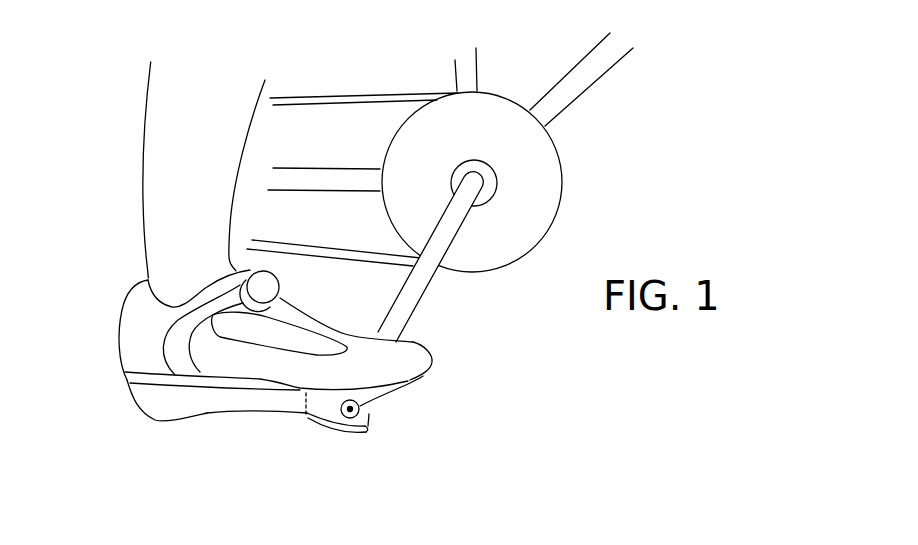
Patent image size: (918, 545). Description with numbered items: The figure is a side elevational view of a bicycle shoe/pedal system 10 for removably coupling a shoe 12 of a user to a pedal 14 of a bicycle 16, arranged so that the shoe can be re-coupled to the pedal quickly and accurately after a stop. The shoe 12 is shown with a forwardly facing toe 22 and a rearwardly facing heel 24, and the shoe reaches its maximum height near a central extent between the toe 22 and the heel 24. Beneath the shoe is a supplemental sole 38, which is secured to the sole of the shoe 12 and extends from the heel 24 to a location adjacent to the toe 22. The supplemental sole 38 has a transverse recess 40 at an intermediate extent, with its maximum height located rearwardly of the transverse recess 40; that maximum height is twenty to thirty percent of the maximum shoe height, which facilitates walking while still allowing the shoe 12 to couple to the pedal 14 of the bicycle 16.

The bicycle shoe/pedal system 10 is at (630, 187).
The shoe 12 is at (412, 342).
The pedal 14 is at (369, 414).
The bicycle 16 is at (485, 92).
The toe 22 is at (434, 360).
The heel 24 is at (118, 330).
The supplemental sole 38 is at (183, 402).
The transverse recess 40 is at (250, 413).